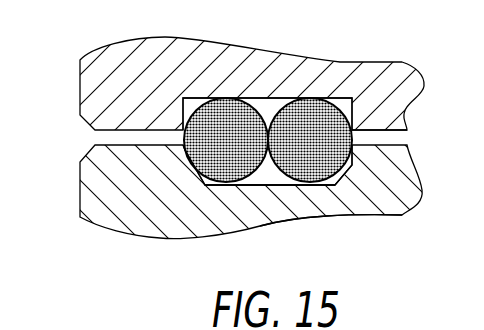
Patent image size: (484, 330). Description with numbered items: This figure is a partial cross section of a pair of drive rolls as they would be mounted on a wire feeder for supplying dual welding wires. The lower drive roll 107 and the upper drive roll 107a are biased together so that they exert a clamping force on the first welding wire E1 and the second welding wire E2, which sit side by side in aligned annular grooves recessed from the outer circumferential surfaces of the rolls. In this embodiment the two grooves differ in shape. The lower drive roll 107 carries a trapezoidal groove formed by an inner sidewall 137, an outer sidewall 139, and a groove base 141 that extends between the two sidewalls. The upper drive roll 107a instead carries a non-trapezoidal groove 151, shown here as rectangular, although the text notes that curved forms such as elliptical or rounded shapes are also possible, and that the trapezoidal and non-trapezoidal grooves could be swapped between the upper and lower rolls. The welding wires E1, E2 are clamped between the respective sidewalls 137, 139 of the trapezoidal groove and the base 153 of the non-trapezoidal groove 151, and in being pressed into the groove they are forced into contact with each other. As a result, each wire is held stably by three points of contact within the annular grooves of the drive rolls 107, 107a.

The upper drive roll 107a is at (80, 97).
The drive roll 107 is at (80, 188).
The base of the non-trapezoidal groove 153 is at (253, 97).
The outer sidewall 139 is at (205, 170).
The groove base 141 is at (288, 188).
The inner sidewall 137 is at (360, 193).
The non-trapezoidal groove 151 is at (369, 100).
The second welding wire E2 is at (220, 97).
The first welding wire E1 is at (320, 113).